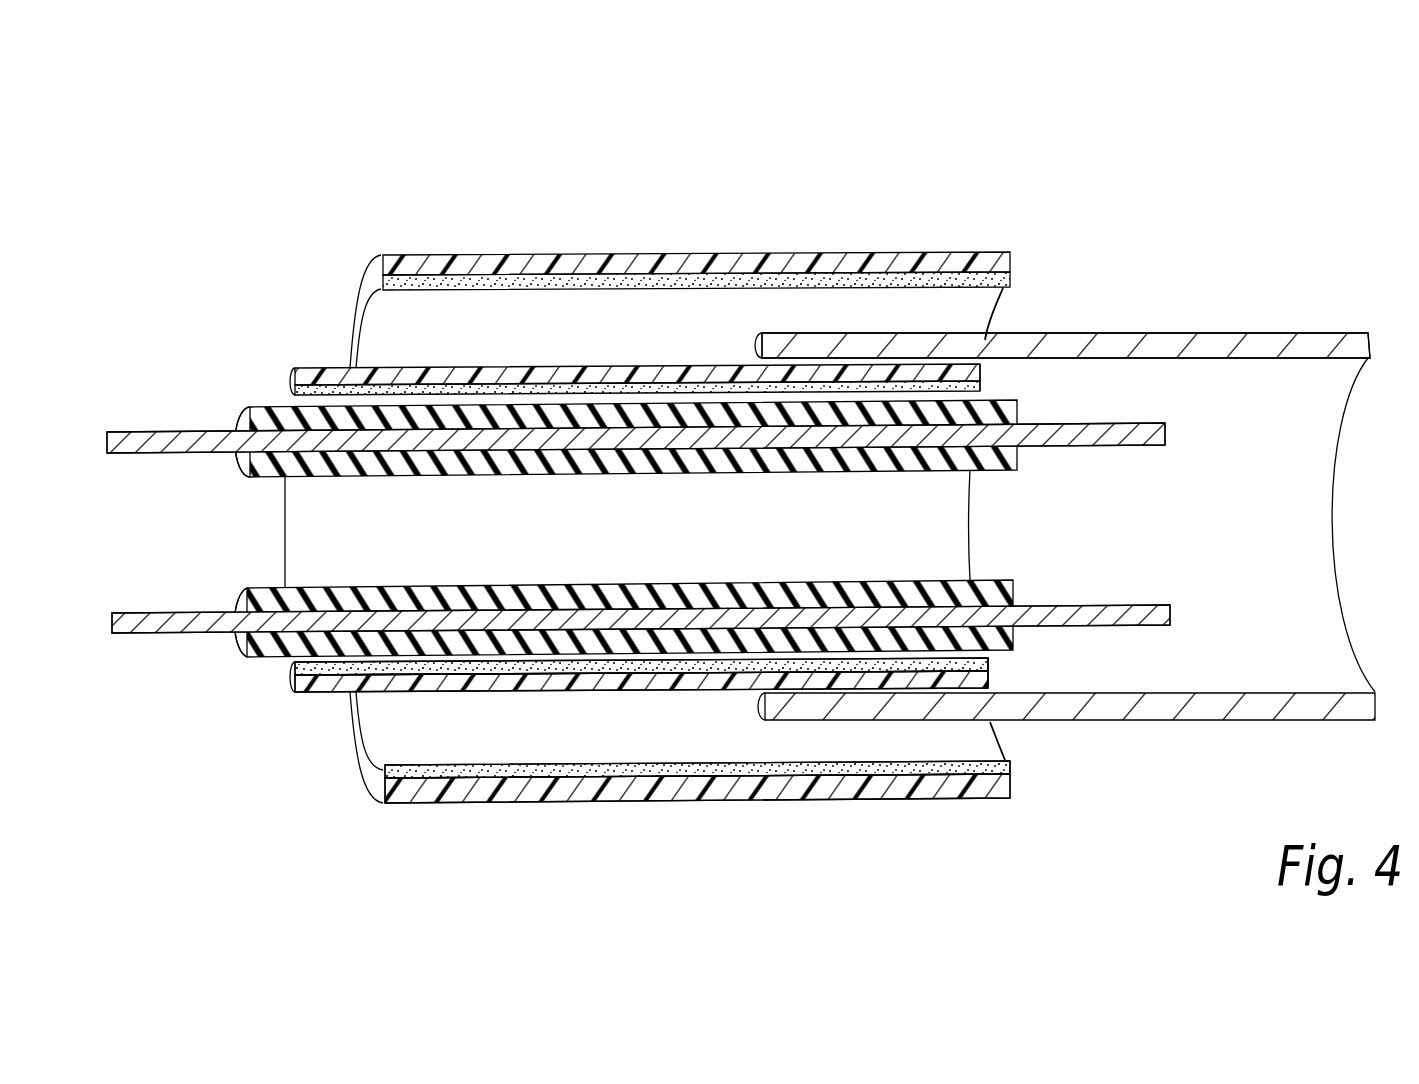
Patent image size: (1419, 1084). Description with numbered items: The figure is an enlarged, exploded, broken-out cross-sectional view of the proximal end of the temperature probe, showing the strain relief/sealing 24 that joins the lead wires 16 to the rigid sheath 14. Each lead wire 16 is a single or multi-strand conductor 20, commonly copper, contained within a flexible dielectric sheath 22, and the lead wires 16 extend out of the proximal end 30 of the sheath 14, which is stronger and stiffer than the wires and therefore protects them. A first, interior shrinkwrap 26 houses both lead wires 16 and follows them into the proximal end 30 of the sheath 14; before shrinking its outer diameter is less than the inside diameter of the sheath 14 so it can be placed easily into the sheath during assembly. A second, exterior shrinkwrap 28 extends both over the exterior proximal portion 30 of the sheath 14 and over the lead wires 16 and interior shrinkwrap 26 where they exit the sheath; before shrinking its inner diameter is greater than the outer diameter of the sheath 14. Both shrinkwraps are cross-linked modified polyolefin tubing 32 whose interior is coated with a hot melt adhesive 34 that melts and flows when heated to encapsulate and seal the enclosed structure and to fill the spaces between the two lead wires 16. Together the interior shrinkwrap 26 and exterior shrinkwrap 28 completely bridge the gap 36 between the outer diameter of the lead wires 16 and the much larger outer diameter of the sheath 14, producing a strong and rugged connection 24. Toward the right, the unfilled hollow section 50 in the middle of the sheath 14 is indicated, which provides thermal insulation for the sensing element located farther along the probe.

The rigid sheath 14 is at (1173, 343).
The lead wires 16 is at (272, 408).
The conductor 20 is at (158, 432).
The dielectric sheath 22 is at (257, 477).
The strain relief/sealing 24 is at (760, 202).
The interior shrinkwrap 26 is at (302, 690).
The exterior shrinkwrap 28 is at (483, 803).
The proximal end 30 is at (913, 343).
The polyolefin tubing 32 is at (350, 700).
The adhesive 34 is at (440, 672).
The gap 36 is at (963, 690).
The hollow section 50 is at (1303, 484).